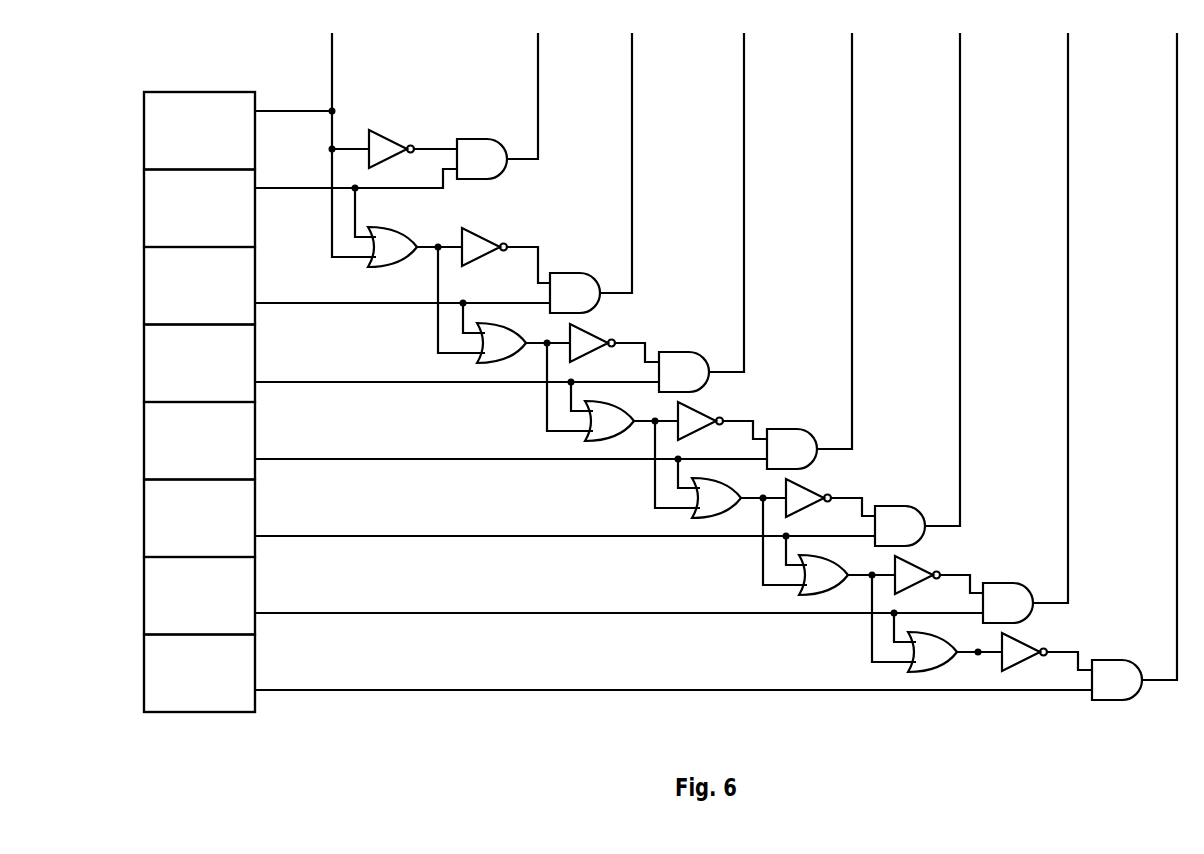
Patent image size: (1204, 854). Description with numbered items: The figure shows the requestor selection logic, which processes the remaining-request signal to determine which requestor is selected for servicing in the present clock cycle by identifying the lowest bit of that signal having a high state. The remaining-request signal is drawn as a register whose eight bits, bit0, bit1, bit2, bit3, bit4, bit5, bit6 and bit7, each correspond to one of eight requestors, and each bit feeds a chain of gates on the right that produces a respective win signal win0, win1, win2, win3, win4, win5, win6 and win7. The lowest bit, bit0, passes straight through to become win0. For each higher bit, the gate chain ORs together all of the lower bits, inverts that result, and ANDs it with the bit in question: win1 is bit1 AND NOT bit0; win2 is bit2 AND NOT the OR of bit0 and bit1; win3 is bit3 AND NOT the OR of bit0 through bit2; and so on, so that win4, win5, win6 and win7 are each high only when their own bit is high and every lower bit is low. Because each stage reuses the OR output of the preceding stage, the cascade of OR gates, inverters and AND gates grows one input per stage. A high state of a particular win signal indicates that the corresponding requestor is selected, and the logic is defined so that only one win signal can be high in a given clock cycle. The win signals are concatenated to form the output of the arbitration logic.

The rem_req[0] bit bit0 is at (240, 131).
The rem_req[1] bit bit1 is at (300, 208).
The rem_req[2] bit bit2 is at (347, 286).
The rem_req[3] bit bit3 is at (401, 364).
The rem_req[4] bit bit4 is at (455, 441).
The rem_req[5] bit bit5 is at (509, 519).
The rem_req[6] bit bit6 is at (563, 596).
The rem_req[7] bit bit7 is at (618, 674).
The win0 signal win0 is at (341, 130).
The win1 signal win1 is at (534, 81).
The win2 signal win2 is at (628, 148).
The win3 signal win3 is at (739, 188).
The win4 signal win4 is at (847, 226).
The win5 signal win5 is at (955, 265).
The win6 signal win6 is at (1063, 303).
The win7 signal win7 is at (1171, 342).